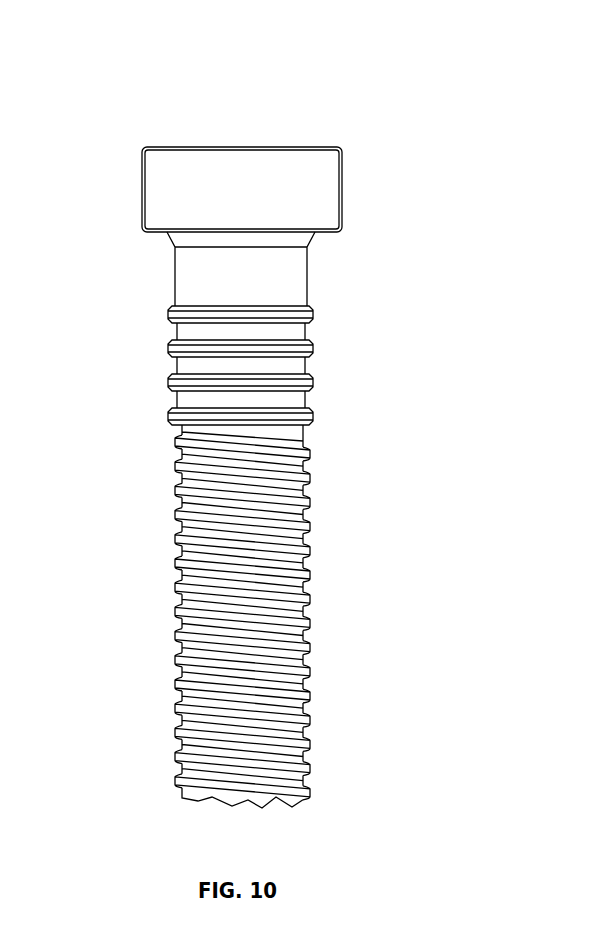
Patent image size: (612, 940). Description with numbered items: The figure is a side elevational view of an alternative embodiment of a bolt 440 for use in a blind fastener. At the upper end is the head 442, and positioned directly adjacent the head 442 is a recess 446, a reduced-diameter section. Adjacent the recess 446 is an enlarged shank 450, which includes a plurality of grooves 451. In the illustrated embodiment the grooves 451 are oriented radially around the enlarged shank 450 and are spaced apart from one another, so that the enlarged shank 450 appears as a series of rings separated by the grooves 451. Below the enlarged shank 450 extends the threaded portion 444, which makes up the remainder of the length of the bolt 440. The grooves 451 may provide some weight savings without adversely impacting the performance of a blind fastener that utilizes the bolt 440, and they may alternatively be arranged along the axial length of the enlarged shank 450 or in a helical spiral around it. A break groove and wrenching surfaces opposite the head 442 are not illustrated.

The bolt 440 is at (400, 71).
The head 442 is at (342, 183).
The threaded portion 444 is at (300, 579).
The recess 446 is at (307, 278).
The enlarged shank 450 is at (313, 343).
The grooves 451 is at (176, 400).